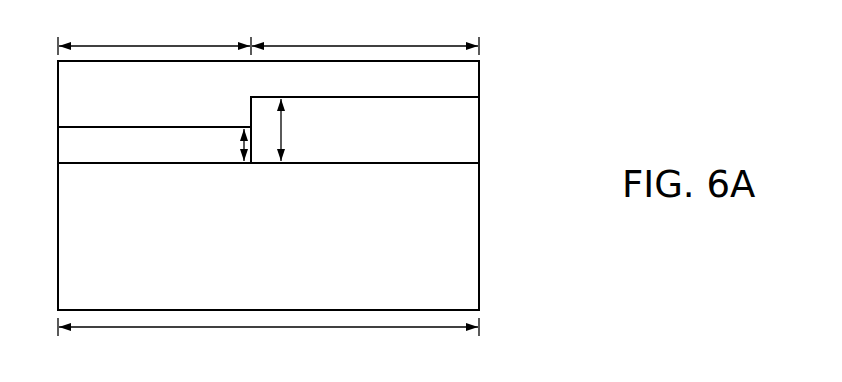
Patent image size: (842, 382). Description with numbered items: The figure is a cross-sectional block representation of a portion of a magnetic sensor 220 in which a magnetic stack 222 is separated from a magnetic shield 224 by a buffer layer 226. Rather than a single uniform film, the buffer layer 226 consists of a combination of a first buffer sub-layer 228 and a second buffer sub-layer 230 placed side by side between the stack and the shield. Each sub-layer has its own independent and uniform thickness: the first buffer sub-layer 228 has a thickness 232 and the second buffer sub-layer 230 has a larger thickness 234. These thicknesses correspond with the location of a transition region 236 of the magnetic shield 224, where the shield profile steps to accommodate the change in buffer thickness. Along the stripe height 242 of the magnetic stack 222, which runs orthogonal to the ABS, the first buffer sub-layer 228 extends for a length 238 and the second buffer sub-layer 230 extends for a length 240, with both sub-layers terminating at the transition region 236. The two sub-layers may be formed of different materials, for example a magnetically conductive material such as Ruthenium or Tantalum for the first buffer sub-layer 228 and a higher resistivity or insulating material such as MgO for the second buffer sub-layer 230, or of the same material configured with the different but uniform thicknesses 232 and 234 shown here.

The magnetic sensor 220 is at (497, 40).
The magnetic stack 222 is at (268, 235).
The magnetic shield 224 is at (268, 96).
The buffer layer 226 is at (55, 150).
The first buffer sub-layer 228 is at (154, 145).
The second buffer sub-layer 230 is at (365, 130).
The thickness of first buffer sub-layer 232 is at (223, 145).
The thickness of second buffer sub-layer 234 is at (300, 130).
The transition region 236 is at (247, 108).
The length of first buffer sub-layer 238 is at (154, 38).
The length of second buffer sub-layer 240 is at (365, 38).
The stripe height 242 is at (268, 333).